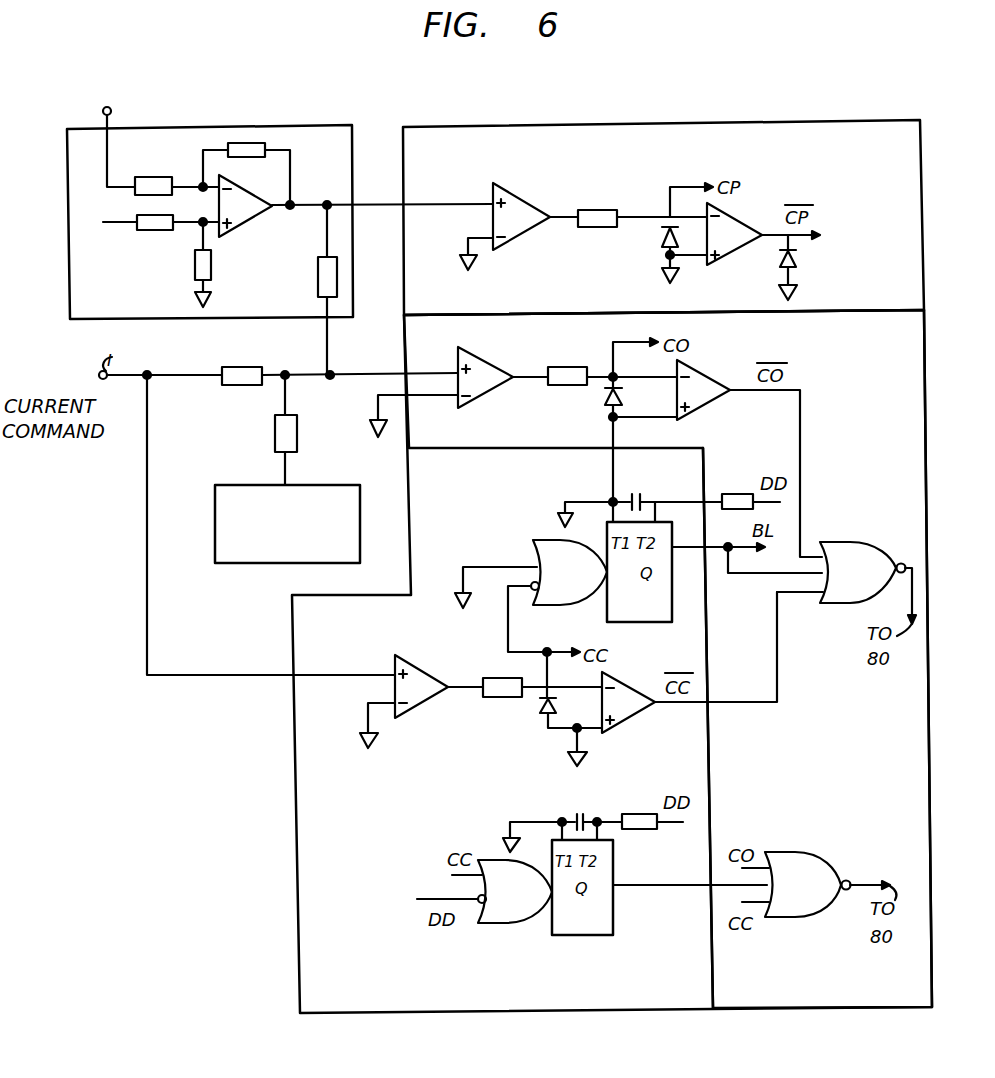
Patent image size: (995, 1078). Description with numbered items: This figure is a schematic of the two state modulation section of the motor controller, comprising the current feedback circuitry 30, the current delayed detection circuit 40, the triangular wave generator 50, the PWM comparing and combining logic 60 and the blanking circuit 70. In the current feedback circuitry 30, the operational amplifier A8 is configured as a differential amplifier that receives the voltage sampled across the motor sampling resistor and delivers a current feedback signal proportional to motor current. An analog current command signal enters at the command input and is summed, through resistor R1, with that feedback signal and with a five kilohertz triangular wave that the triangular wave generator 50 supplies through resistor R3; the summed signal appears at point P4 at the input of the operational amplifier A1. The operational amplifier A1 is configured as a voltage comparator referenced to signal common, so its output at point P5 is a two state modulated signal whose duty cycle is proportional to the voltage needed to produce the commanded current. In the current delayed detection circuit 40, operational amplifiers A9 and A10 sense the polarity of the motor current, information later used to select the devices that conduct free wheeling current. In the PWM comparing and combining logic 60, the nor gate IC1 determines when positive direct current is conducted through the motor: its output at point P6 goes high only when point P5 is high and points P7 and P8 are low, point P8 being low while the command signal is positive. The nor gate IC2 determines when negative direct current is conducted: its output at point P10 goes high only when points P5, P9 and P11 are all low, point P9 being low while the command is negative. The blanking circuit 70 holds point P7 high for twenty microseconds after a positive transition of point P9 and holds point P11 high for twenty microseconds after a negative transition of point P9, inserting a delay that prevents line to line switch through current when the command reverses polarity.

The current feedback circuitry 30 is at (283, 127).
The current delayed detection circuit 40 is at (677, 123).
The triangular wave generator 50 is at (215, 512).
The PWM comparing and combining logic 60 is at (927, 486).
The blanking circuit 70 is at (510, 1013).
The resistor R1 is at (263, 367).
The resistor R3 is at (318, 283).
The point P4 is at (350, 370).
The point P5 is at (527, 375).
The point P6 is at (903, 563).
The point P7 is at (765, 575).
The point P8 is at (732, 704).
The point P9 is at (467, 690).
The point P10 is at (869, 880).
The point P11 is at (657, 888).
The operational amplifier A1 is at (485, 377).
The operational amplifier A8 is at (245, 206).
The operational amplifier A9 is at (521, 216).
The operational amplifier A10 is at (734, 234).
The nor gate IC1 is at (863, 572).
The nor gate IC2 is at (808, 884).